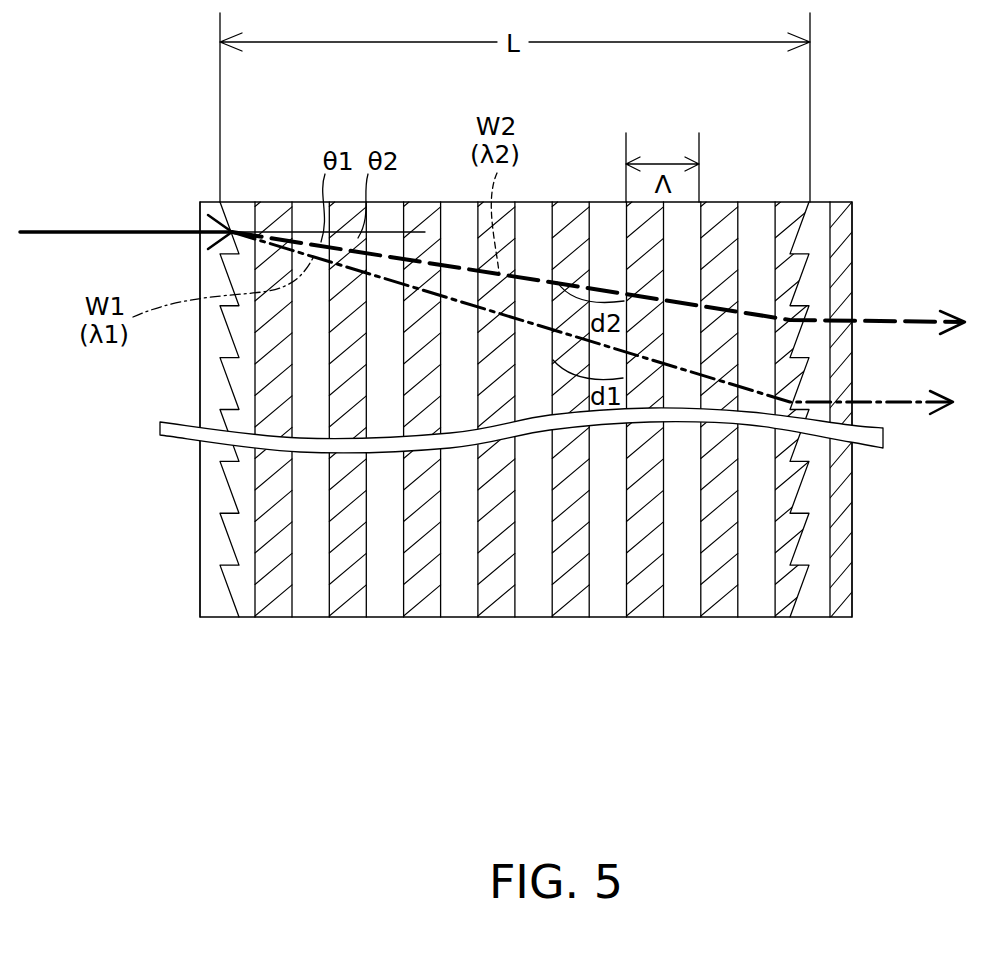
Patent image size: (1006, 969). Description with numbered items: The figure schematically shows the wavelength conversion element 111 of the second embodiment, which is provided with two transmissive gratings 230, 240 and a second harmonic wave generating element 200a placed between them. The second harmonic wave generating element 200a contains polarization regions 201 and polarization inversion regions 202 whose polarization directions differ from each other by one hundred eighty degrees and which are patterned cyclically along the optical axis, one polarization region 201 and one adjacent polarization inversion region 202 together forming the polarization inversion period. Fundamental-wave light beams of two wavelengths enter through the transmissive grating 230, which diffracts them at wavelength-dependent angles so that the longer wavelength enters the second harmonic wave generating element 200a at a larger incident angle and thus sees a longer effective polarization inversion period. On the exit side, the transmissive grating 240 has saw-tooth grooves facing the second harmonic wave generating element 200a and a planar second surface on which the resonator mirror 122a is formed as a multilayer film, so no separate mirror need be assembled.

The wavelength conversion element 111 is at (579, 482).
The resonator mirror 122a is at (838, 202).
The second harmonic wave generating element 200a is at (528, 470).
The polarization region 201 is at (608, 597).
The polarization inversion region 202 is at (787, 628).
The transmissive grating 230 is at (217, 620).
The transmissive grating 240 is at (812, 620).